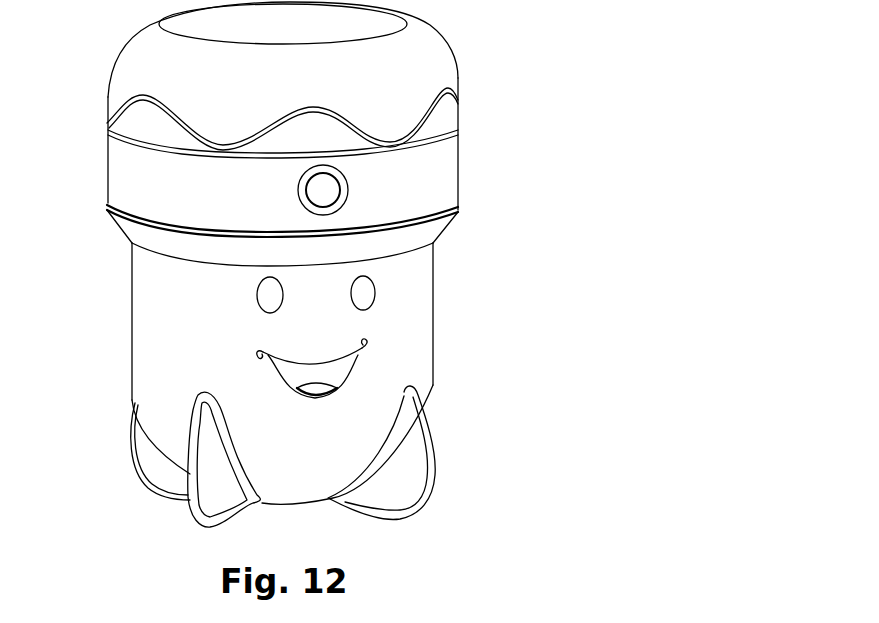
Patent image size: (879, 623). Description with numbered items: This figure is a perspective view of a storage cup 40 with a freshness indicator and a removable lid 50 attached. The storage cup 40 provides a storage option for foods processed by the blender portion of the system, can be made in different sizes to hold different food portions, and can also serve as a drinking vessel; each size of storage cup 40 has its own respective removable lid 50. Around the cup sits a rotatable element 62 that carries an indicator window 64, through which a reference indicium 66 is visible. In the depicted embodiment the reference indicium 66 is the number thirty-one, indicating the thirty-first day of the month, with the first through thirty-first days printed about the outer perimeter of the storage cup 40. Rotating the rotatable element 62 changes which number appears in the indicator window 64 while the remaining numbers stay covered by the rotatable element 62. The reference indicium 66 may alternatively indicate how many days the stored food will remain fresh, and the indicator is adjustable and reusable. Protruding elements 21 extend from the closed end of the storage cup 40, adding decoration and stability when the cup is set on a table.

The removable lid 50 is at (447, 60).
The rotatable element 62 is at (447, 172).
The indicator window 64 is at (298, 188).
The reference indicium 66 is at (333, 178).
The storage cup 40 is at (428, 302).
The feet 21 is at (425, 452).